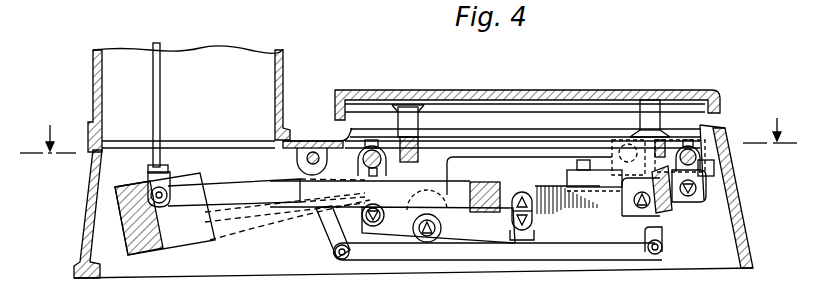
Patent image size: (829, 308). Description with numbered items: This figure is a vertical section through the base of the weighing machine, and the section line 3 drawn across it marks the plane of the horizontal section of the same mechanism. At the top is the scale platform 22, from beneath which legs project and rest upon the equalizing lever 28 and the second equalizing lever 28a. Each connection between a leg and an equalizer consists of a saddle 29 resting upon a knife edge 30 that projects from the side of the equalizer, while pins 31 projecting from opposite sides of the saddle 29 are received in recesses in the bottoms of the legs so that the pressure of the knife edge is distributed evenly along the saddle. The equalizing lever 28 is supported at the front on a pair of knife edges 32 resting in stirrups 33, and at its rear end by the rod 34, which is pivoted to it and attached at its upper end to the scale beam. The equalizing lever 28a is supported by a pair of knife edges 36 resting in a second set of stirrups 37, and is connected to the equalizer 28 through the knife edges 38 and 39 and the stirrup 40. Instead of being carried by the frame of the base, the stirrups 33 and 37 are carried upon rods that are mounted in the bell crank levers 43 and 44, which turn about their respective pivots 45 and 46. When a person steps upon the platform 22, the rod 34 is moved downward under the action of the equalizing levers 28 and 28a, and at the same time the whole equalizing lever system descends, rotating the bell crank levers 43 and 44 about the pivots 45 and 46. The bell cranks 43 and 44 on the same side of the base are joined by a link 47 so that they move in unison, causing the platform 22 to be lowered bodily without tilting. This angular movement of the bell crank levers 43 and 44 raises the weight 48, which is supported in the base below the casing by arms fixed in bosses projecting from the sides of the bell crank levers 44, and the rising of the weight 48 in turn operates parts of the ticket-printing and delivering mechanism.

The section line 3— 3 is at (408, 132).
The scale platform 22 is at (588, 89).
The equalizing lever 28 is at (587, 258).
The second equalizing lever 28a is at (473, 230).
The saddle 29 is at (664, 212).
The knife edge 30 is at (638, 210).
The pins 31 is at (597, 211).
The knife edges 32 is at (707, 190).
The stirrups 33 is at (714, 168).
The rod 34 is at (160, 87).
The knife edges 36 is at (362, 220).
The stirrups 37 is at (300, 207).
The knife edge 38 is at (520, 240).
The knife edge 39 is at (522, 192).
The stirrup 40 is at (553, 215).
The bell crank lever 43 is at (683, 148).
The bell crank lever 44 is at (340, 150).
The pivot 45 is at (628, 144).
The pivot 46 is at (312, 154).
The link 47 is at (392, 252).
The weight 48 is at (130, 228).